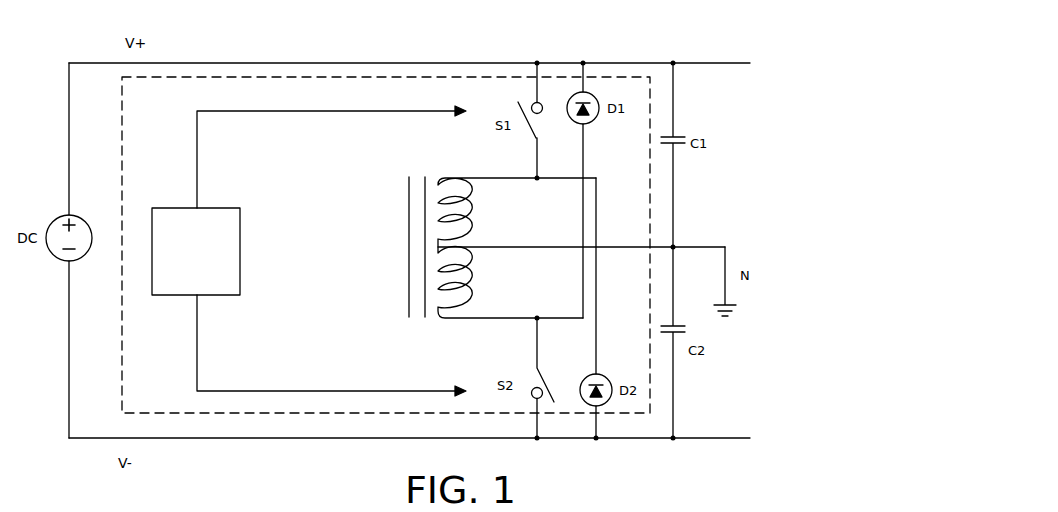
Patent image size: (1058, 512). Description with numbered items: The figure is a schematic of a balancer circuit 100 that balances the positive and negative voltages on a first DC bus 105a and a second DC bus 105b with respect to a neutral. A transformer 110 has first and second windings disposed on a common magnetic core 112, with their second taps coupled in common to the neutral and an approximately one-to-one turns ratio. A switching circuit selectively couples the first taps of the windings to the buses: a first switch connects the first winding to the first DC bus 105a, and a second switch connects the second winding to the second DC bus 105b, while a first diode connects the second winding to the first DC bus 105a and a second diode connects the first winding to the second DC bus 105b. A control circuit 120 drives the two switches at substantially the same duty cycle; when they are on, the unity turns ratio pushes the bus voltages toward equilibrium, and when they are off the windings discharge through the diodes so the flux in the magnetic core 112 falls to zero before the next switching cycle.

The balancer circuit 100 is at (352, 75).
The first DC bus 105a is at (219, 62).
The second DC bus 105b is at (168, 438).
The transformer 110 is at (498, 240).
The magnetic core 112 is at (408, 307).
The control circuit 120 is at (222, 208).